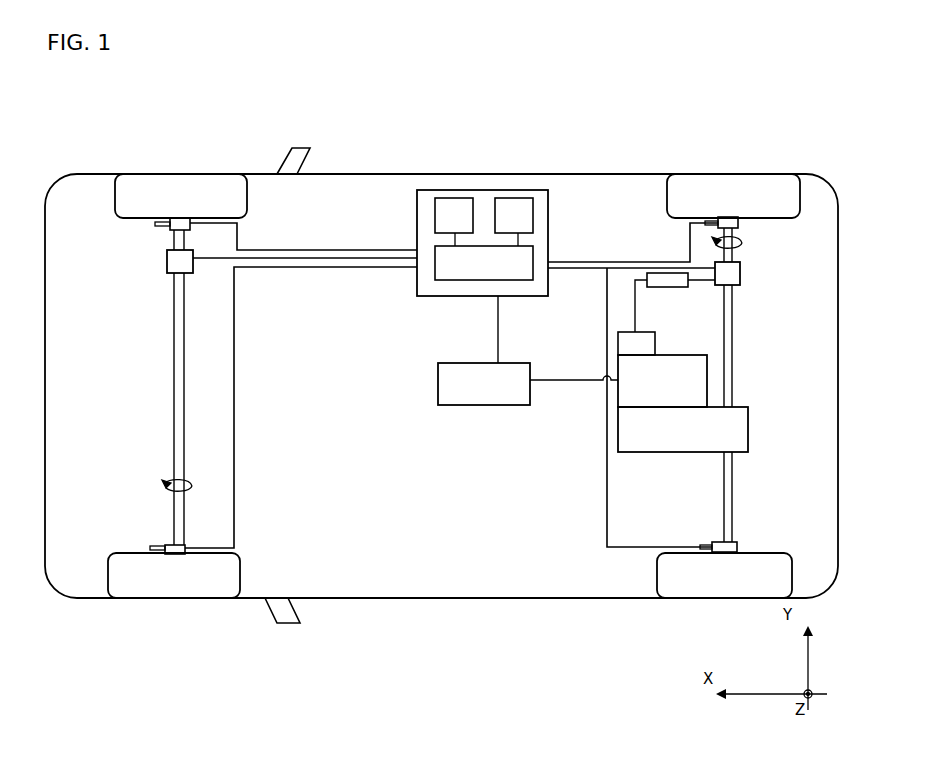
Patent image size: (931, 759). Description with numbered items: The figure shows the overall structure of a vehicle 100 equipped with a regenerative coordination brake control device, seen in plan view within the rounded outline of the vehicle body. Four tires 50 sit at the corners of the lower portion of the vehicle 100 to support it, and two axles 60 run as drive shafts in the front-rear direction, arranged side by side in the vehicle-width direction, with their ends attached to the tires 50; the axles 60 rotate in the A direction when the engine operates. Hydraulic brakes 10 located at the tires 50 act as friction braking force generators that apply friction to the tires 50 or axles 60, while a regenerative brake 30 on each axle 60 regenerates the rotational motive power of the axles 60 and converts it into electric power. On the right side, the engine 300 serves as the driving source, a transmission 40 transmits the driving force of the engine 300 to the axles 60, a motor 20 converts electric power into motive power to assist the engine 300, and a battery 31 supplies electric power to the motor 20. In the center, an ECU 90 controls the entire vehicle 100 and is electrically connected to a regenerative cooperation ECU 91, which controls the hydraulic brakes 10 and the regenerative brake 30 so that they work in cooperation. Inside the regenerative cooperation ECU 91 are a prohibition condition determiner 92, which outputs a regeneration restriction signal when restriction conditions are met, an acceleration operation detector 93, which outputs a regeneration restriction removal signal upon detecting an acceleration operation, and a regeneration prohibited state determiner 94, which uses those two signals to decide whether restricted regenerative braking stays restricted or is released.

The vehicle 100 is at (150, 130).
The tires 50 is at (247, 195).
The hydraulic brakes 10 is at (155, 224).
The axles 60 is at (173, 355).
The regenerative brake 30 is at (193, 265).
The battery 31 is at (678, 288).
The motor 20 is at (655, 335).
The engine 300 is at (707, 378).
The transmission 40 is at (748, 430).
The ECU 90 is at (485, 405).
The regenerative cooperation ECU 91 is at (428, 296).
The prohibition condition determiner 92 is at (435, 217).
The acceleration operation detector 93 is at (533, 203).
The regeneration prohibited state determiner 94 is at (533, 248).
The A direction A is at (190, 485).